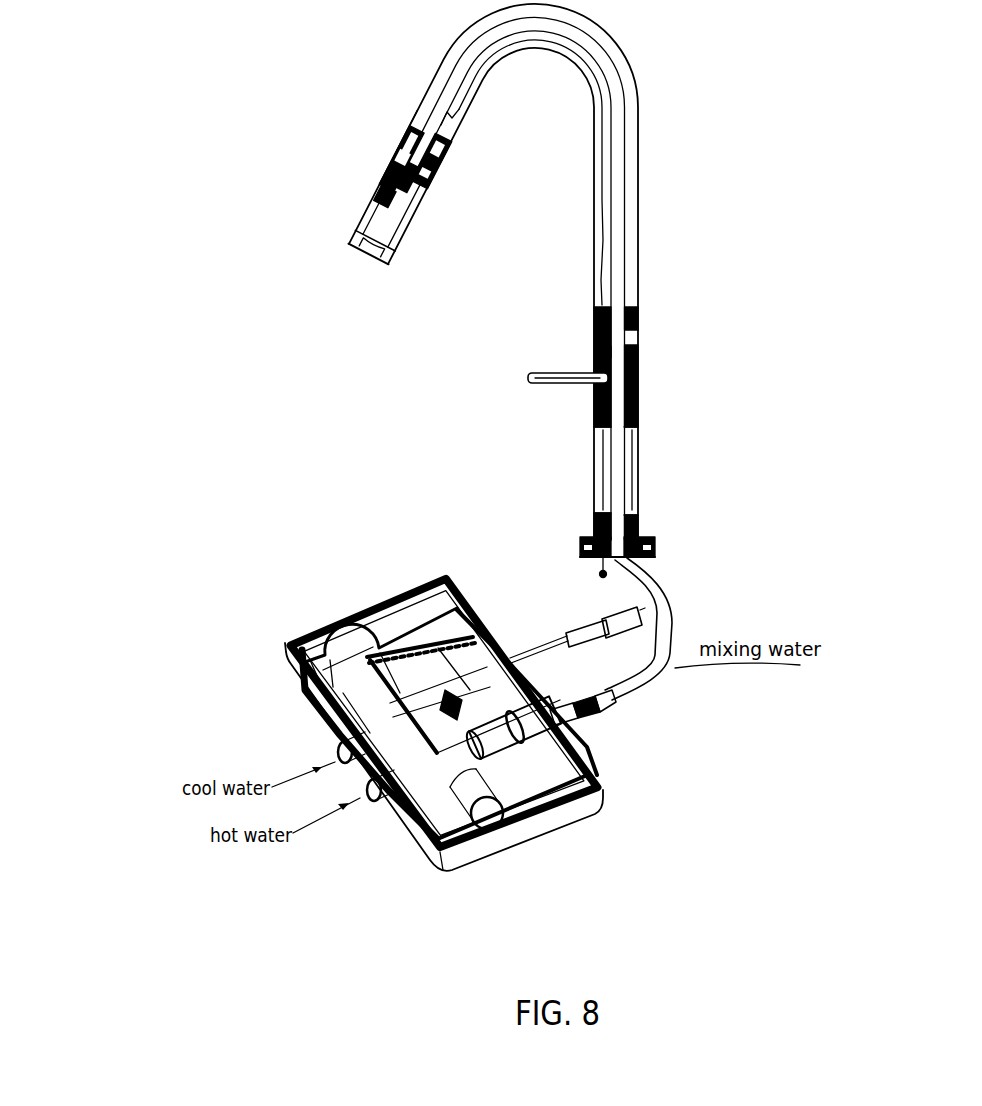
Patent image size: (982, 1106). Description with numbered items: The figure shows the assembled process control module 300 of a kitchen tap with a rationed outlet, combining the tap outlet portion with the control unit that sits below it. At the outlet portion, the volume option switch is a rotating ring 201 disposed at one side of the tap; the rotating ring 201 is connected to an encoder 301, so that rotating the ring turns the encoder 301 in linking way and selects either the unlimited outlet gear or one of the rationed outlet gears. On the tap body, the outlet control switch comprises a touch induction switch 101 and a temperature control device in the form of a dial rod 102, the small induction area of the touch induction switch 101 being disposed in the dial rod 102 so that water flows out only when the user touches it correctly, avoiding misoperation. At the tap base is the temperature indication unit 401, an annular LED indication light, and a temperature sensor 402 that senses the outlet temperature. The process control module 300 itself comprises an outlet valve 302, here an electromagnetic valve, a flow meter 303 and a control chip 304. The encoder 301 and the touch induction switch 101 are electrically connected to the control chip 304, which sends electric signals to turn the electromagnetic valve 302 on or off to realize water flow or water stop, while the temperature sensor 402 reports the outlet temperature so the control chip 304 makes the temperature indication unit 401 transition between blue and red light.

The process control module 300 is at (178, 677).
The encoder 301 is at (392, 155).
The rotating ring 201 is at (432, 260).
The touch induction switch 101 is at (600, 352).
The dial rod 102 is at (528, 376).
The temperature indication unit 401 is at (655, 540).
The temperature sensor 402 is at (593, 712).
The flow meter 303 is at (438, 648).
The control chip 304 is at (347, 620).
The outlet valve 302 is at (305, 695).